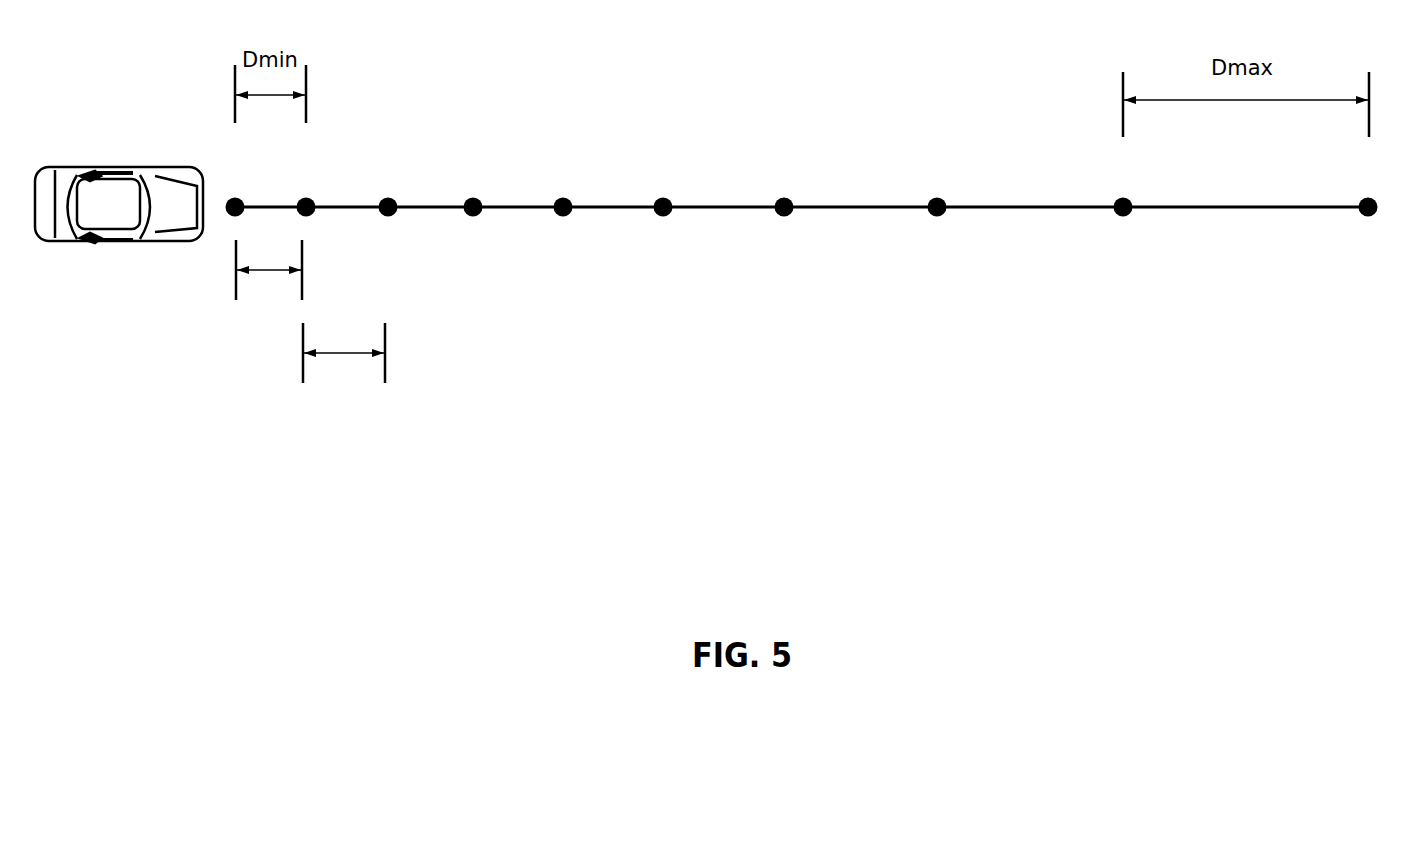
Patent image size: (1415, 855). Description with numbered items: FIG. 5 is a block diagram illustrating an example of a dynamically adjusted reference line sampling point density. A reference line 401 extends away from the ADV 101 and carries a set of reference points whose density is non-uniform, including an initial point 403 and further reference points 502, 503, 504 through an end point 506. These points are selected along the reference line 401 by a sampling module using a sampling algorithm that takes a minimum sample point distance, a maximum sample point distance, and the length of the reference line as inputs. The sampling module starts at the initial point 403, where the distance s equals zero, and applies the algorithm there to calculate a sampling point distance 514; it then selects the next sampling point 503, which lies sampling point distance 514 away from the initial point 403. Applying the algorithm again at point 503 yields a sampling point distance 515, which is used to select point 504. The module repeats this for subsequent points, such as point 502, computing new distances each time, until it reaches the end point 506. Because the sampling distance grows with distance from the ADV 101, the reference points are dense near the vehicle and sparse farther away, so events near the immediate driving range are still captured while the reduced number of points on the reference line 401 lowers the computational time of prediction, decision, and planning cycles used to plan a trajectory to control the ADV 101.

The ADV 101 is at (95, 217).
The reference line 401 is at (613, 200).
The initial point 403 is at (226, 228).
The reference point 502 is at (785, 198).
The sampling point 503 is at (307, 196).
The sampling point 504 is at (396, 226).
The end point 506 is at (1366, 243).
The sampling point distance 514 is at (269, 277).
The sampling point distance 515 is at (344, 369).